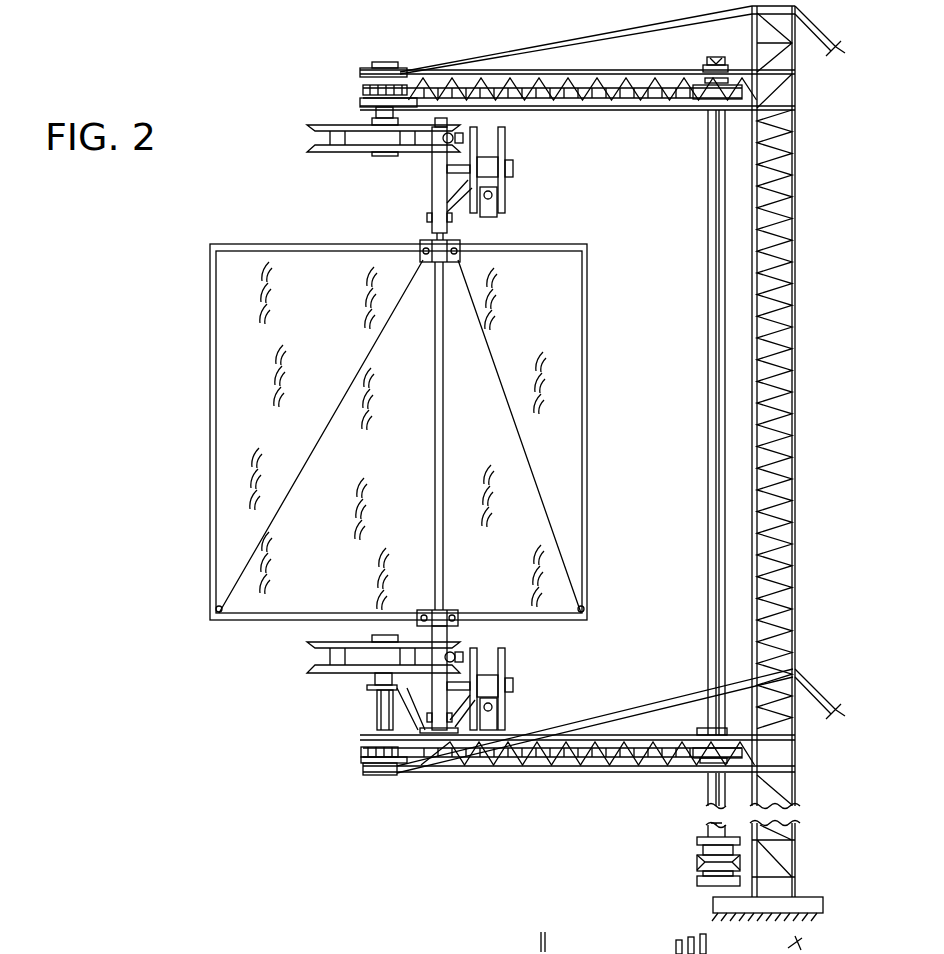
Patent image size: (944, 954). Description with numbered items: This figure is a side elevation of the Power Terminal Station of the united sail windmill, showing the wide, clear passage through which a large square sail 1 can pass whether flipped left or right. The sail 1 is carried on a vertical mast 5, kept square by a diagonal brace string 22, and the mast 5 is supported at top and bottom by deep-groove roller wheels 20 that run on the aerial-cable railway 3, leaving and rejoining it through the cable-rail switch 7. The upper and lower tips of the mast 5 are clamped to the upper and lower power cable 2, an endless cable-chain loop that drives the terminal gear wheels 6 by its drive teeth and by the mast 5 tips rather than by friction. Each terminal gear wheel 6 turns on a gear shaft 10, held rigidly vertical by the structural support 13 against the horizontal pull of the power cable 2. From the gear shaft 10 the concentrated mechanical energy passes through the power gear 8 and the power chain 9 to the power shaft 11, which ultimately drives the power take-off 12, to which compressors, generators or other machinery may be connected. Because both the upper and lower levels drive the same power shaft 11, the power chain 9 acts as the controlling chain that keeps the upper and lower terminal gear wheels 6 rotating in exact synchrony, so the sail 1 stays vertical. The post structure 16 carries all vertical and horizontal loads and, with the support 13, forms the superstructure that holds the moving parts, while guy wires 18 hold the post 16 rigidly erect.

The wind sail 1 is at (248, 407).
The power cable 2 is at (448, 140).
The aerial-cable railway 3 is at (492, 195).
The mast 5 is at (212, 333).
The terminal gear wheel 6 is at (335, 128).
The cable-rail switch 7 is at (490, 210).
The power gear 8 is at (395, 78).
The power chain 9 is at (363, 90).
The gear shaft 10 is at (380, 713).
The power shaft 11 is at (715, 292).
The power take-off 12 is at (703, 860).
The structural support 13 is at (413, 820).
The post structure 16 is at (792, 427).
The guy wire 18 is at (808, 33).
The roller wheel 20 is at (503, 150).
The diagonal brace string 22 is at (253, 548).